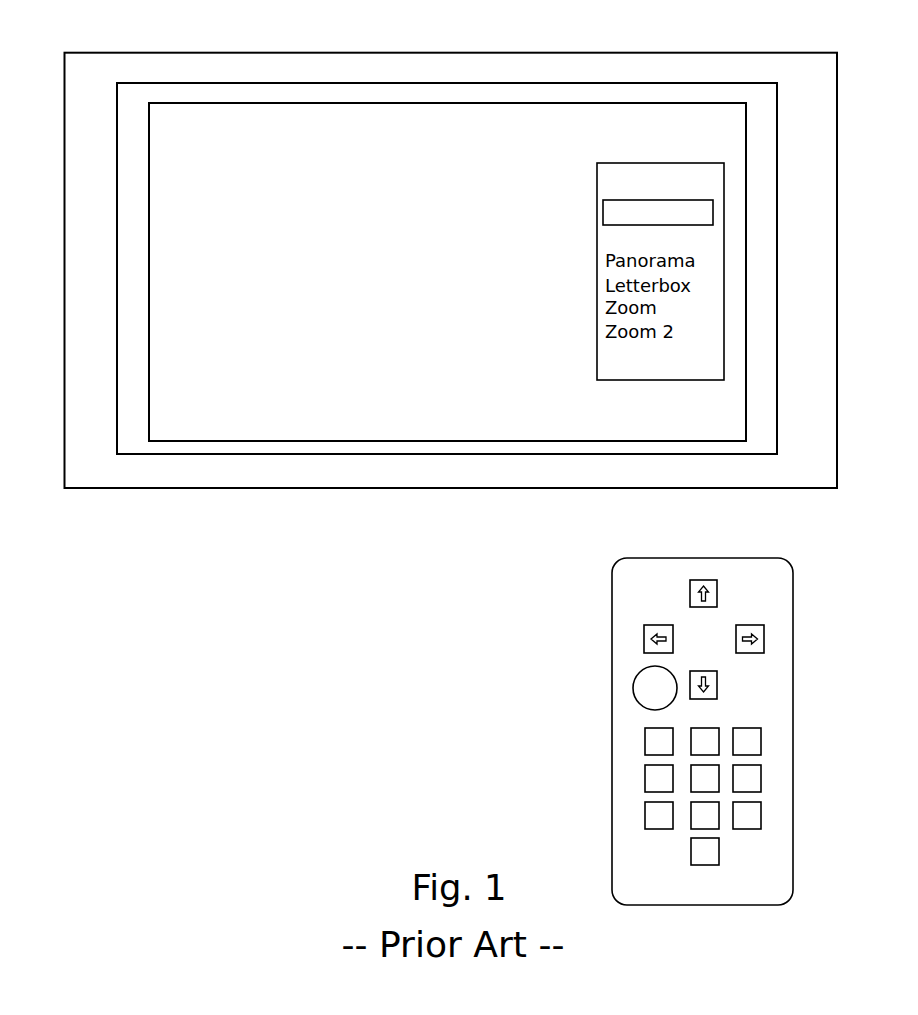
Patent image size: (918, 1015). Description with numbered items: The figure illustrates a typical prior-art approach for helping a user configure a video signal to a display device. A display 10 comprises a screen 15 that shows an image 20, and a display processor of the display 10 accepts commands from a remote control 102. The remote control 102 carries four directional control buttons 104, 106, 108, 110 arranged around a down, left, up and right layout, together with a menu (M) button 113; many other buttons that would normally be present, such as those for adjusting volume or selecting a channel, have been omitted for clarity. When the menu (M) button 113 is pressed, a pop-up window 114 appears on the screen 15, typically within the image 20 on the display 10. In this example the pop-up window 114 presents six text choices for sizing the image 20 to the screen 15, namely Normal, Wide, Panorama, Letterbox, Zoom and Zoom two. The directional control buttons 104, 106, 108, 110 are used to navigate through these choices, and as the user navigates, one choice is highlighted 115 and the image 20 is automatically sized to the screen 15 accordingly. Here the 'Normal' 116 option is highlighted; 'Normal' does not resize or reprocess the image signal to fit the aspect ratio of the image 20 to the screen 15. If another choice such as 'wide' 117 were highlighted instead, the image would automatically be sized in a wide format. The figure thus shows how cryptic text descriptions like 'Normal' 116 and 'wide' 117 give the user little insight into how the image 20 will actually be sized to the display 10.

The display 10 is at (554, 53).
The screen 15 is at (625, 83).
The image 20 is at (697, 103).
The remote control 102 is at (612, 730).
The directional control button 104 is at (717, 697).
The directional control button 106 is at (646, 628).
The directional control button 108 is at (690, 582).
The directional control button 110 is at (763, 637).
The menu (M) button 113 is at (640, 673).
The pop-up window 114 is at (597, 185).
The highlighted choice 115 is at (713, 212).
The 'Normal' option 116 is at (630, 202).
The 'wide' option 117 is at (598, 237).